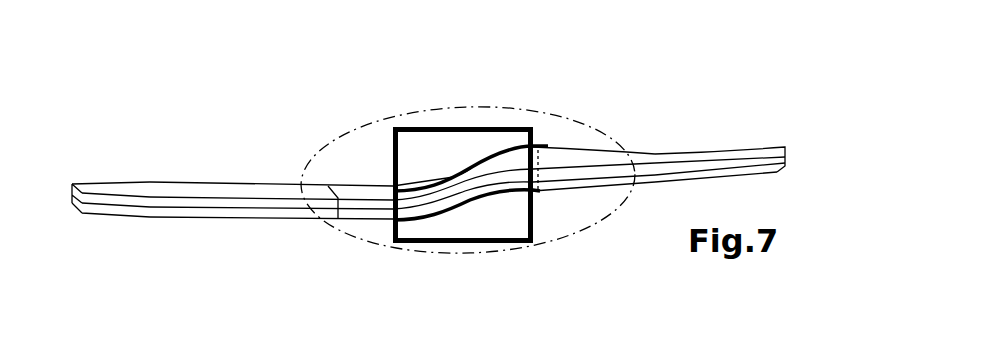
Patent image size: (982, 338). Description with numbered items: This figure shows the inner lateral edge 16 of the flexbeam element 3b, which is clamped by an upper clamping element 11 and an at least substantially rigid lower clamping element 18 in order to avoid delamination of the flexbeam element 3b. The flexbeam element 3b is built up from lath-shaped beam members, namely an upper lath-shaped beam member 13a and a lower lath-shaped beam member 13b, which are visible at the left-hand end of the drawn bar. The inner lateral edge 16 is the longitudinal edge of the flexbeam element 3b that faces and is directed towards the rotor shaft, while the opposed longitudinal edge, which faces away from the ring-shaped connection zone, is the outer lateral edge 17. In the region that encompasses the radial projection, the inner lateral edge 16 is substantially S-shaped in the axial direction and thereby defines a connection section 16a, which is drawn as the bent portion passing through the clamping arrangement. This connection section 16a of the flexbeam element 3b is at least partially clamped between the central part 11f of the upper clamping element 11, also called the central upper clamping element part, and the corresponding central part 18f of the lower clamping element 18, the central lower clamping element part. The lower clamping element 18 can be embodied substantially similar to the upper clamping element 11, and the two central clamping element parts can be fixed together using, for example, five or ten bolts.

The flexbeam element 3b is at (752, 139).
The clamping element 11 is at (425, 120).
The central part of the upper clamping element 11f is at (488, 126).
The upper lath-shaped beam member 13a is at (112, 186).
The lower lath-shaped beam member 13b is at (100, 213).
The inner lateral edge 16 is at (194, 227).
The connection section 16a is at (551, 133).
The outer lateral edge 17 is at (212, 181).
The clamping element 18 is at (445, 251).
The central part of the lower clamping element 18f is at (508, 244).